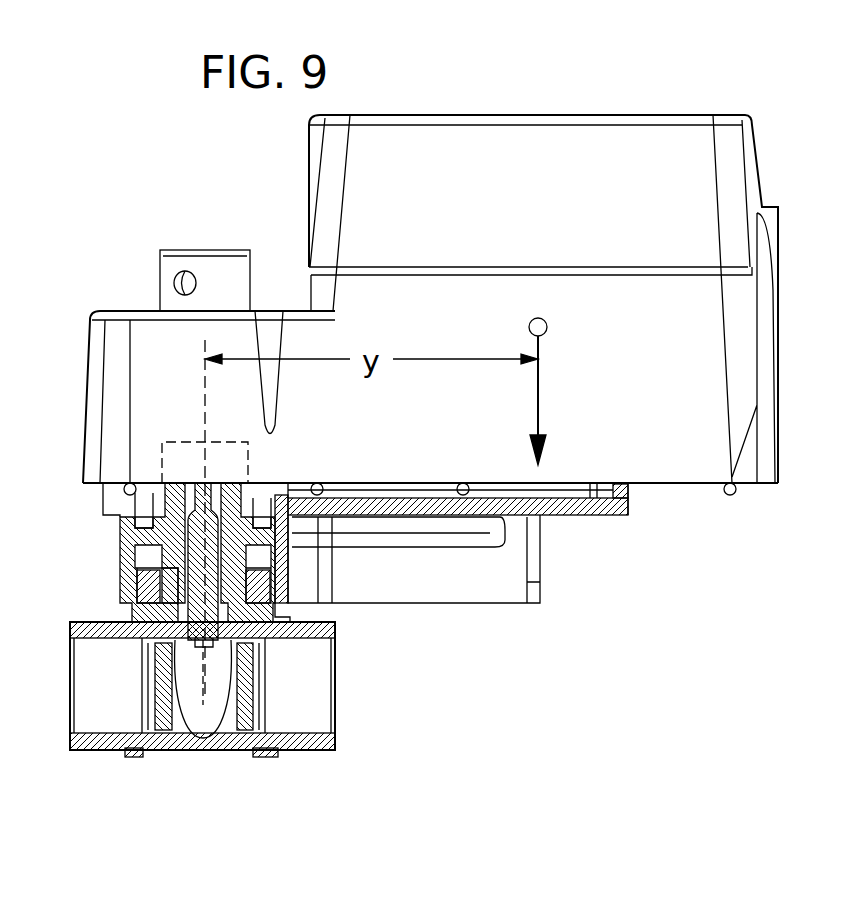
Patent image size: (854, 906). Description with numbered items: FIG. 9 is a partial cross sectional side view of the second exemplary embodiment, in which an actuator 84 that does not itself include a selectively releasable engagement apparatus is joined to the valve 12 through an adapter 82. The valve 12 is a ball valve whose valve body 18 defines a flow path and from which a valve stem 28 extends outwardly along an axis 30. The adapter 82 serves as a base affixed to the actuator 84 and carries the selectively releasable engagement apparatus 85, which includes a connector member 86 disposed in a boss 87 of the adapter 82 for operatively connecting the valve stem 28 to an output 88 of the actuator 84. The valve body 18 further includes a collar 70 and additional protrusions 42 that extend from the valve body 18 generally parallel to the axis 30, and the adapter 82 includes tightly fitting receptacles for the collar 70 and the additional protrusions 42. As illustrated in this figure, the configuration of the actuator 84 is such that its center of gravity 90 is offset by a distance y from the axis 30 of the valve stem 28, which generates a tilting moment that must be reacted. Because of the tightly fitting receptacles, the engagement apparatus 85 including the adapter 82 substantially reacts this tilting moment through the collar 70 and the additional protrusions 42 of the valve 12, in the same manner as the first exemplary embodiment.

The valve 12 is at (72, 627).
The valve body 18 is at (302, 747).
The valve stem 28 is at (170, 538).
The axis 30 is at (205, 418).
The additional protrusions 42 is at (150, 590).
The collar 70 is at (183, 562).
The adapter 82 is at (612, 517).
The actuator 84 is at (695, 378).
The selectively releasable engagement apparatus 85 is at (402, 628).
The connector member 86 is at (162, 516).
The boss 87 is at (307, 535).
The output 88 is at (178, 462).
The center of gravity 90 is at (548, 324).